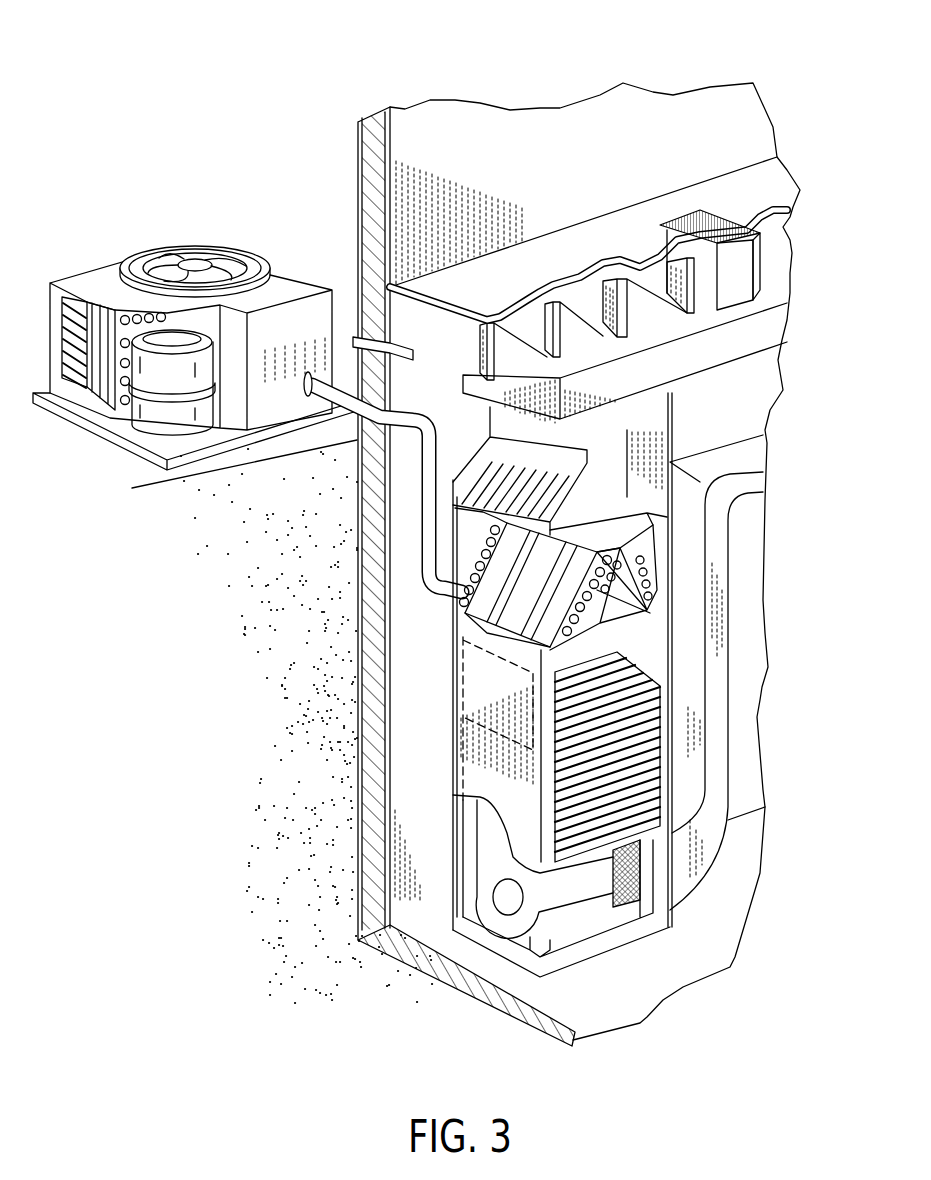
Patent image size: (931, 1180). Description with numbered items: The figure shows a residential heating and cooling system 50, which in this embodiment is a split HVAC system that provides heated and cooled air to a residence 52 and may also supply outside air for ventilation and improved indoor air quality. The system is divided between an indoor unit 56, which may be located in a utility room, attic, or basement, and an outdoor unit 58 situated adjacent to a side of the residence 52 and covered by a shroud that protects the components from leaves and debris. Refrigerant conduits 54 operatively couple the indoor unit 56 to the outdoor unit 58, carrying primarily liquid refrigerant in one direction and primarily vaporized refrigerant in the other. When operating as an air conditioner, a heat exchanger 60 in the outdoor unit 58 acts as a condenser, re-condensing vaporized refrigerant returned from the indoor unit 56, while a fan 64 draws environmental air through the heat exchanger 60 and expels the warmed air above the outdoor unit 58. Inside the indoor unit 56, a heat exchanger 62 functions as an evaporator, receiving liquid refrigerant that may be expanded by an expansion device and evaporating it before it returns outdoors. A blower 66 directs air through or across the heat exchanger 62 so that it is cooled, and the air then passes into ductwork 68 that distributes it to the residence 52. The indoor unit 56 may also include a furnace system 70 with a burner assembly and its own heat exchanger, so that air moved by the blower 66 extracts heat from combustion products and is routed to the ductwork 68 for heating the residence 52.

The residential heating and cooling system 50 is at (190, 78).
The residence 52 is at (493, 128).
The refrigerant conduits 54 is at (422, 497).
The indoor unit 56 is at (432, 738).
The outdoor unit 58 is at (152, 241).
The heat exchanger 60 is at (130, 318).
The heat exchanger 62 is at (513, 610).
The fan 64 is at (216, 250).
The blower 66 is at (507, 915).
The ductwork 68 is at (713, 347).
The furnace system 70 is at (463, 722).